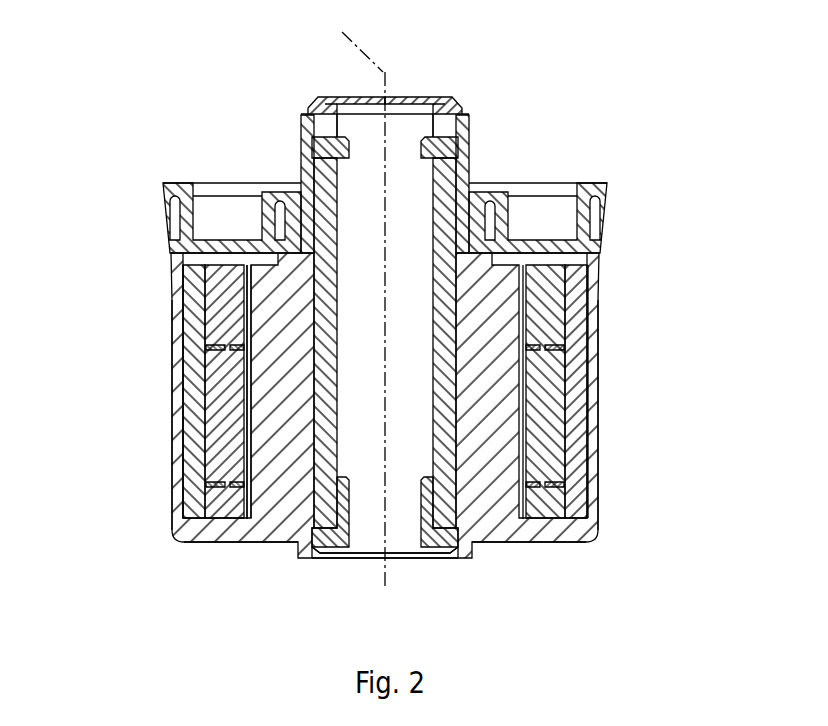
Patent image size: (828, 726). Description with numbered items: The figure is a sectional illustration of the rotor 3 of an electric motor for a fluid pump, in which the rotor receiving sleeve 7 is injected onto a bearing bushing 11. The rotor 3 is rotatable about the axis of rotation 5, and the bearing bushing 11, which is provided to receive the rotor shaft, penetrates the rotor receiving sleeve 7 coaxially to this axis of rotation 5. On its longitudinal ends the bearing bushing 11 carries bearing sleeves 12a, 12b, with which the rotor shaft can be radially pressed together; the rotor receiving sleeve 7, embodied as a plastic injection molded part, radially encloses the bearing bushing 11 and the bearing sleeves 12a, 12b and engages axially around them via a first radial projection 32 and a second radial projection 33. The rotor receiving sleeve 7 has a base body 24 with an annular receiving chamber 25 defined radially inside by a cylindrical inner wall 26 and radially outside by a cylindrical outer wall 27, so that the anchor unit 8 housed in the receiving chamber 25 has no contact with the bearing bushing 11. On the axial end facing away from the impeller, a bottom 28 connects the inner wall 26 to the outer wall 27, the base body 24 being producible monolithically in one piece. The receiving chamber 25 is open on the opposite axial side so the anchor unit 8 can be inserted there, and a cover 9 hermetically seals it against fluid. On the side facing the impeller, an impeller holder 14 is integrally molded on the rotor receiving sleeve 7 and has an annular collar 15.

The rotor 3 is at (140, 130).
The axis of rotation 5 is at (354, 298).
The rotor receiving sleeve 7 is at (612, 393).
The anchor unit 8 is at (555, 317).
The cover 9 is at (577, 213).
The bearing bushing 11 is at (452, 450).
The bearing sleeve 12a is at (434, 545).
The bearing sleeve 12b is at (450, 146).
The impeller holder 14 is at (450, 124).
The annular collar 15 is at (450, 100).
The base body 24 is at (597, 505).
The receiving chamber 25 is at (178, 427).
The inner wall 26 is at (287, 318).
The outer wall 27 is at (178, 358).
The bottom 28 is at (231, 545).
The first radial projection 32 is at (312, 552).
The second radial projection 33 is at (443, 132).